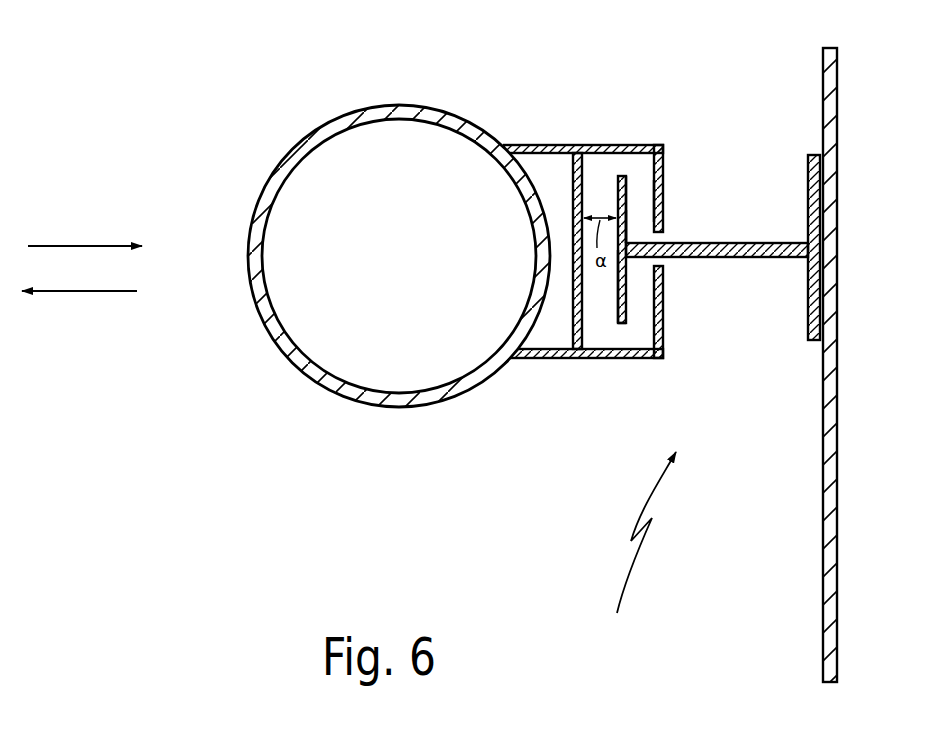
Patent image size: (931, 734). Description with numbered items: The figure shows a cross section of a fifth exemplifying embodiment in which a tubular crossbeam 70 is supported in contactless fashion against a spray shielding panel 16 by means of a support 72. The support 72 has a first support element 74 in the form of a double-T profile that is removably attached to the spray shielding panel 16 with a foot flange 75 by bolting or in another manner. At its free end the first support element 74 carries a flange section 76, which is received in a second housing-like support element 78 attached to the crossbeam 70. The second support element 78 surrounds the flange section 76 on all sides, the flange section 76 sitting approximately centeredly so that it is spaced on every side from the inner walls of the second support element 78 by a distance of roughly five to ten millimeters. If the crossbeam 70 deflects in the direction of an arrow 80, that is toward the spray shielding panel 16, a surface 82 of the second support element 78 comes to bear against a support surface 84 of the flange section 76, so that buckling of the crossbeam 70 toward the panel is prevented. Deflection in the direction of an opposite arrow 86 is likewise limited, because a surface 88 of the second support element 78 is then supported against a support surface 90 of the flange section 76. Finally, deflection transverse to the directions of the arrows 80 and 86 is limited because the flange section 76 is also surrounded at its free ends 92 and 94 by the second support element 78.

The spray shielding panel 16 is at (825, 570).
The tubular crossbeam 70 is at (337, 380).
The support 72 is at (642, 551).
The first support element 74 is at (743, 262).
The foot flange 75 is at (820, 182).
The flange section 76 is at (665, 248).
The second housing-like support element 78 is at (590, 147).
The arrow 80 is at (82, 246).
The surface of second support element 82 is at (563, 357).
The support surface of flange section 84 is at (615, 302).
The arrow 86 is at (77, 291).
The surface of second support element 88 is at (645, 211).
The support surface of flange section 90 is at (628, 222).
The free end of flange section 92 is at (622, 177).
The free end of flange section 94 is at (619, 325).